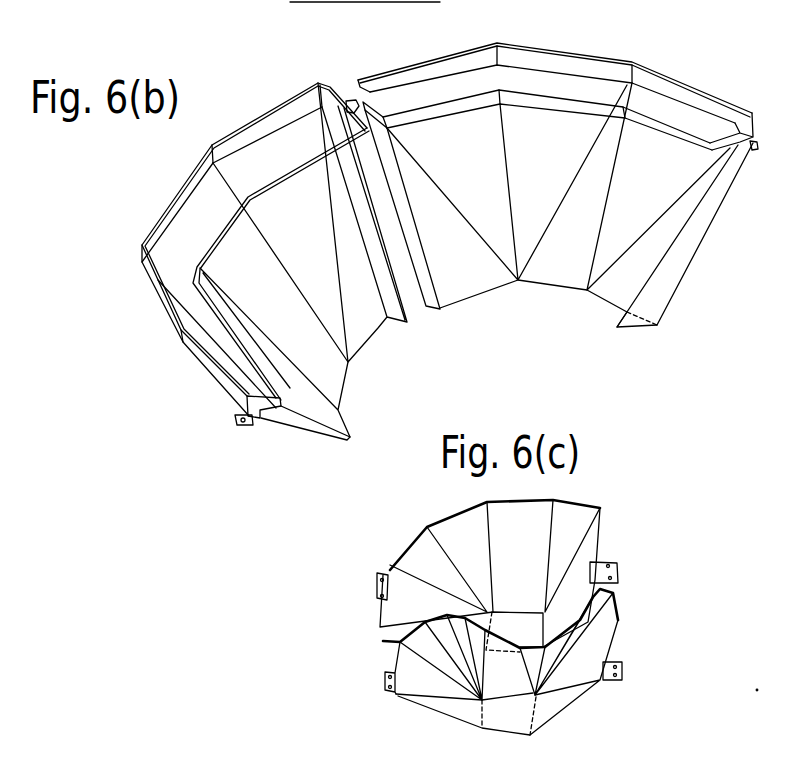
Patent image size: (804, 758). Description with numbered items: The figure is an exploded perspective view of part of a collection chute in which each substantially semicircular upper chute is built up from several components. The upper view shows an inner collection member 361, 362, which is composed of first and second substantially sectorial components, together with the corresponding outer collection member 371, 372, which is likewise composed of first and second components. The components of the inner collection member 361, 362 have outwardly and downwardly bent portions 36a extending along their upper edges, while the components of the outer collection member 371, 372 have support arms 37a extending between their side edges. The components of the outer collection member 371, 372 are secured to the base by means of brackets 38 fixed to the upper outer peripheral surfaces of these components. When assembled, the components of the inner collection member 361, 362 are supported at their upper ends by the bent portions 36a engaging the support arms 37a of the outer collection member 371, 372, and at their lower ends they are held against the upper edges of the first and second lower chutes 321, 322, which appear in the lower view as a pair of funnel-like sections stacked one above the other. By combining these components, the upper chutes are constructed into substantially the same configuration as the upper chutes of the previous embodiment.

In FIG. 6B, the bent portion 36a is at (268, 10).
In FIG. 6B, the inner collection member 361 is at (494, 163).
In FIG. 6B, the inner collection member 362 is at (238, 261).
In FIG. 6B, the outer collection member 371 is at (494, 95).
In FIG. 6B, the outer collection member 372 is at (190, 227).
In FIG. 6B, the support arm 37a is at (553, 105).
In FIG. 6B, the bracket 38 is at (350, 105).
In FIG. 6C, the first lower chute 321 is at (445, 520).
In FIG. 6C, the second lower chute 322 is at (585, 682).